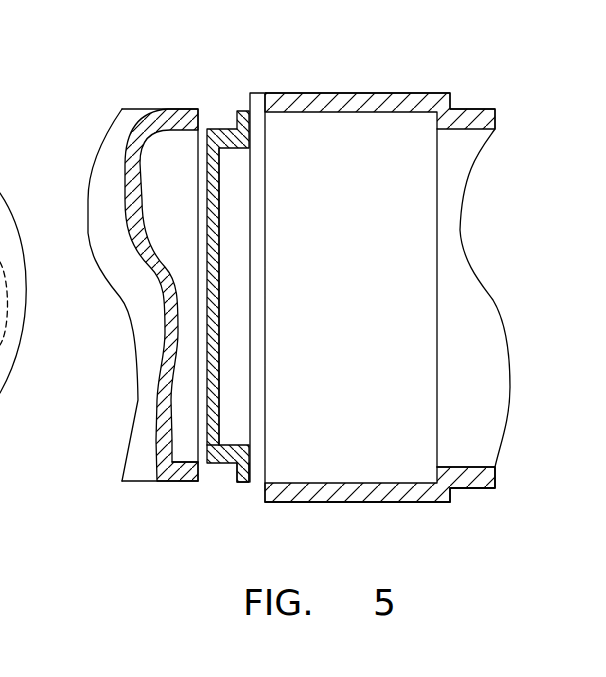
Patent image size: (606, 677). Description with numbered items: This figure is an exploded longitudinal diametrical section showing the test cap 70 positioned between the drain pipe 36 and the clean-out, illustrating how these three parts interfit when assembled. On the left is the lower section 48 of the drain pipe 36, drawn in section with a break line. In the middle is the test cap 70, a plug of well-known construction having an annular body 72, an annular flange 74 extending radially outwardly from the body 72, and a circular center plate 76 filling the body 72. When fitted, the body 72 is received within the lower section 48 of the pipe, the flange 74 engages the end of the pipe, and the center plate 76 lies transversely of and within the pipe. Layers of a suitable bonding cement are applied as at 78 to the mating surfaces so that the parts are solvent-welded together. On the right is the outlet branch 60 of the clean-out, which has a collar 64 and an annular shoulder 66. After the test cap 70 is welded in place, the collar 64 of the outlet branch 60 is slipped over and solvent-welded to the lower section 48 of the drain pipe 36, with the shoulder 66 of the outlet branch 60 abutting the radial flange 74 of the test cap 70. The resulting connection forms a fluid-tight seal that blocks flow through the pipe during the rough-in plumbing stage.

The drain pipe 36 is at (97, 132).
The lower section of the drain pipe 48 is at (135, 481).
The outlet branch 60 is at (378, 93).
The collar 64 is at (340, 502).
The annular shoulder 66 is at (440, 475).
The test cap 70 is at (247, 494).
The annular body 72 is at (216, 127).
The annular flange 74 is at (250, 100).
The center plate 76 is at (218, 287).
The bonding cement layers 78 is at (185, 462).